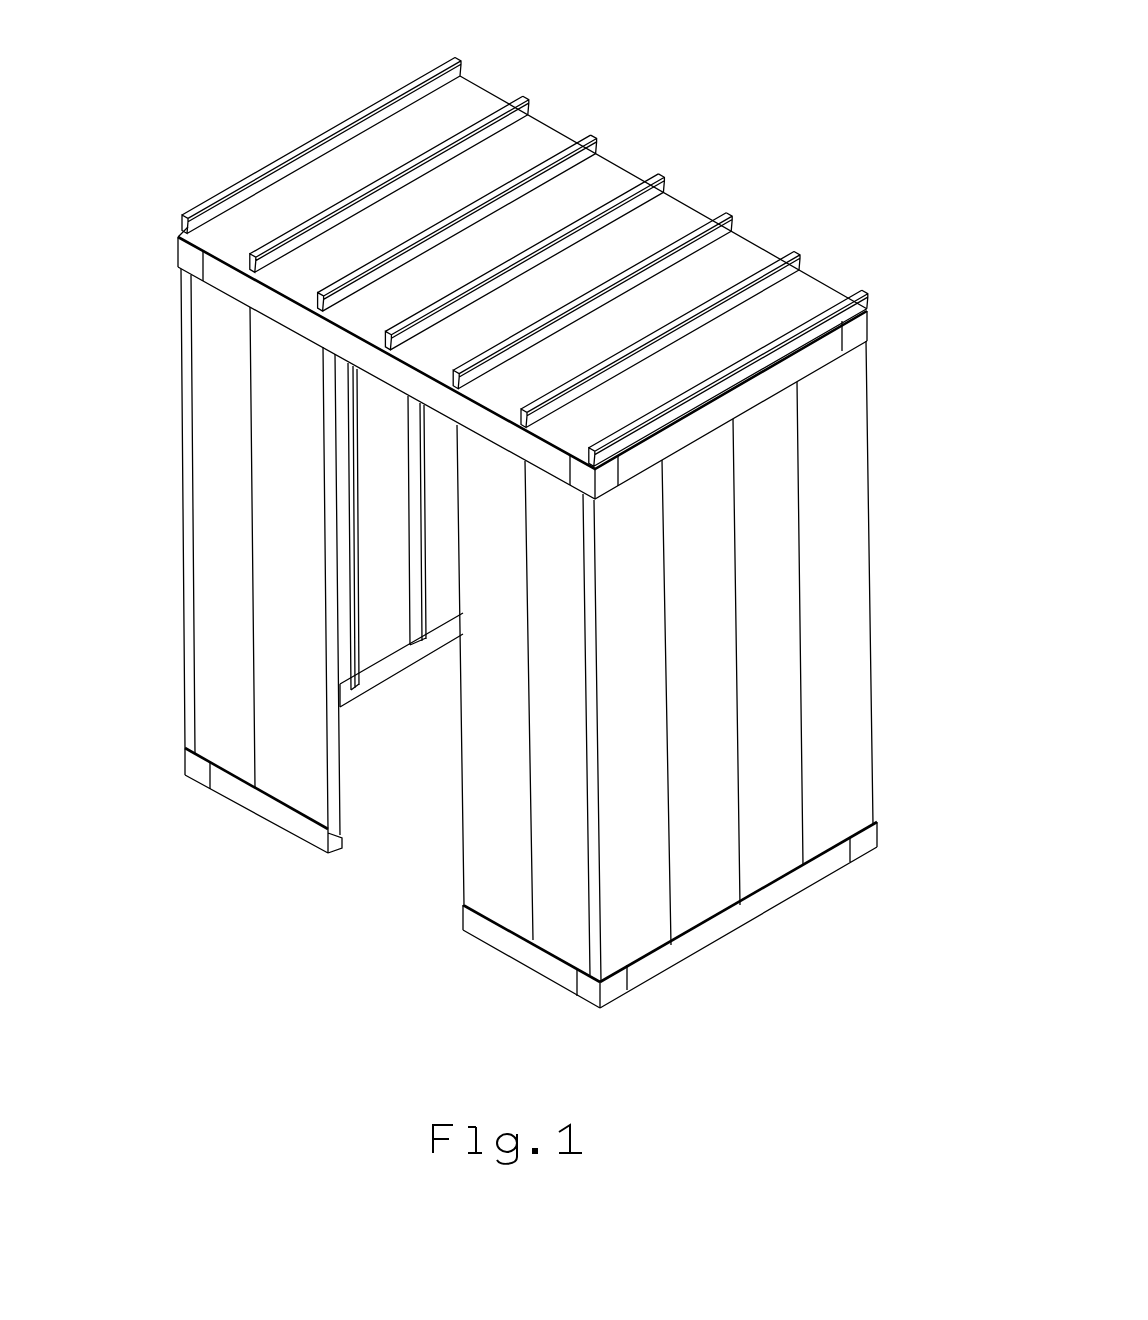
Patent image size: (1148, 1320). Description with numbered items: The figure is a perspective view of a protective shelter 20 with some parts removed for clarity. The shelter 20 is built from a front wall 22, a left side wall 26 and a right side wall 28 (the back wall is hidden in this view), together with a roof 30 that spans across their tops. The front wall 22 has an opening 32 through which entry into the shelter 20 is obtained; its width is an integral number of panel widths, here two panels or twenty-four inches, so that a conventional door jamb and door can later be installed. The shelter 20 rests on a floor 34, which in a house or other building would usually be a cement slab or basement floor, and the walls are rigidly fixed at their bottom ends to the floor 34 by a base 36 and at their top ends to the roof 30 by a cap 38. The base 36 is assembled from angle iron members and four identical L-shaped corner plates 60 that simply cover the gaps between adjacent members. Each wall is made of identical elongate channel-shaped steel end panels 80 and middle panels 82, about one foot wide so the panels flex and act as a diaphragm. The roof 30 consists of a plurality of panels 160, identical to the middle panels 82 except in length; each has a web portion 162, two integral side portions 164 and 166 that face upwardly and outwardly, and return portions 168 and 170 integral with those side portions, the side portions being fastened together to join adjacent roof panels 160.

The protective shelter 20 is at (547, 515).
The front wall 22 is at (242, 580).
The left side wall 26 is at (369, 636).
The right side wall 28 is at (573, 674).
The roof 30 is at (547, 254).
The opening 32 is at (423, 827).
The floor 34 is at (396, 649).
The base 36 is at (205, 760).
The cap 38 is at (177, 250).
The corner plate 60 is at (615, 988).
The end panel 80 is at (524, 680).
The middle panel 82 is at (300, 418).
The roof panel 160 is at (568, 255).
The web portion 162 is at (385, 168).
The side portion 164 is at (570, 238).
The side portion 166 is at (774, 378).
The return portion 168 is at (608, 368).
The return portion 170 is at (716, 377).